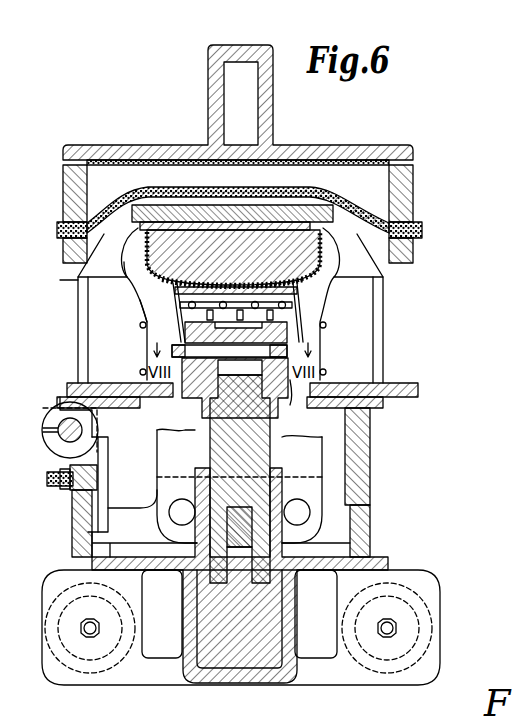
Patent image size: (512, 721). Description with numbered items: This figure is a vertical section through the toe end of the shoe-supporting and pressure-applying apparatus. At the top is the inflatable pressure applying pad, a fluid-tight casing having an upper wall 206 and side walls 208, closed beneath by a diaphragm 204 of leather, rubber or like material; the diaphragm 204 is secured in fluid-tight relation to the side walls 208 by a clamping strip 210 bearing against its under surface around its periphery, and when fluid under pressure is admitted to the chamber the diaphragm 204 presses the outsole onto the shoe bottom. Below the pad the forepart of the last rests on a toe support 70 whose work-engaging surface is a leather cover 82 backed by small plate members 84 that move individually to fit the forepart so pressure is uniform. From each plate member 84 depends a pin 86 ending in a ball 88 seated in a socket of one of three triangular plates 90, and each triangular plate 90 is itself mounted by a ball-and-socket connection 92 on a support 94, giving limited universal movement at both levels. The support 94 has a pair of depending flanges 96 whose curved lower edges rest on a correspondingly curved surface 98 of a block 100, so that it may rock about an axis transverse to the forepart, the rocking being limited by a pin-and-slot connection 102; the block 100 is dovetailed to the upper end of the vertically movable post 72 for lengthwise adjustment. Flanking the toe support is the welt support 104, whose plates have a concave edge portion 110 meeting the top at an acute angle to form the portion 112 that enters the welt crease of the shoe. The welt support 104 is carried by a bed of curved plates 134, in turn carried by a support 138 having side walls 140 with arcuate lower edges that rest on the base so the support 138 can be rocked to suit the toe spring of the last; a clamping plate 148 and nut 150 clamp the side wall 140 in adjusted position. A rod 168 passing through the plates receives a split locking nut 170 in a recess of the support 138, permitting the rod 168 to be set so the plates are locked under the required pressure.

The toe support 70 is at (123, 294).
The post 72 is at (262, 455).
The leather cover 82 is at (177, 297).
The plate members 84 is at (176, 282).
The pin 86 is at (312, 311).
The ball 88 is at (292, 308).
The triangular plates 90 is at (158, 320).
The ball-and-socket connection 92 is at (172, 340).
The support 94 is at (290, 335).
The depending flanges 96 is at (238, 398).
The curved surface 98 is at (245, 370).
The block 100 is at (292, 382).
The pin-and-slot connection 102 is at (197, 362).
The welt support 104 is at (402, 325).
The concave edge portion 110 is at (400, 282).
The welt-crease entering portion 112 is at (125, 222).
The curved plates 134 is at (68, 390).
The support 138 is at (389, 467).
The side walls 140 is at (90, 478).
The clamping plate 148 is at (103, 455).
The nut 150 is at (63, 488).
The rod 168 is at (64, 425).
The split locking nut 170 is at (45, 440).
The diaphragm 204 is at (278, 200).
The upper wall 206 is at (155, 170).
The side walls 208 is at (405, 180).
The clamping strip 210 is at (420, 243).